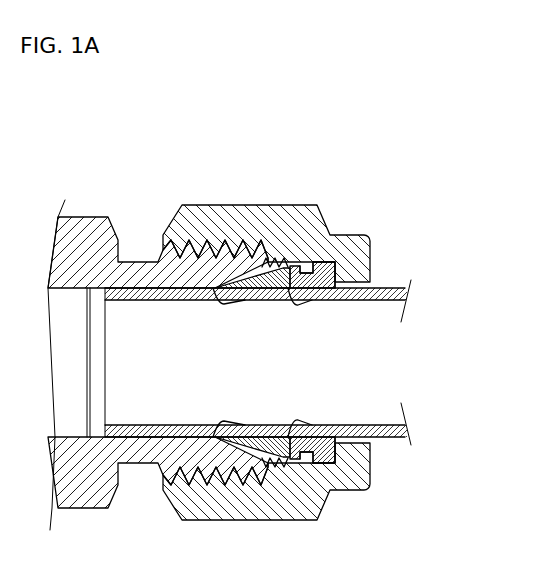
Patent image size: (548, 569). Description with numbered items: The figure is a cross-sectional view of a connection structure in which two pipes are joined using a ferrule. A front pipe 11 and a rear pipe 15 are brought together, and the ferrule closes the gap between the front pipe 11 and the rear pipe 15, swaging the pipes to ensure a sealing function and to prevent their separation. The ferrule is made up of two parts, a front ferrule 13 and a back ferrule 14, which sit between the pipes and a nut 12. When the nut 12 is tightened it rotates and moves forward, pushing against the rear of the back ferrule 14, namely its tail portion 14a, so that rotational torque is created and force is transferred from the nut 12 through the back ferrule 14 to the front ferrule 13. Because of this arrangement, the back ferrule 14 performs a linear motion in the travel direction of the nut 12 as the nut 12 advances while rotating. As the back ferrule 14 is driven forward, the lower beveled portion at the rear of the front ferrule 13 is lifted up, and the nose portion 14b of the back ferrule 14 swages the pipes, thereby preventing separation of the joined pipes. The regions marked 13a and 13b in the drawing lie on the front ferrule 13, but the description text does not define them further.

The front pipe 11 is at (85, 232).
The nut 12 is at (372, 242).
The front ferrule 13 is at (250, 300).
The front ferrule front portion 13a is at (240, 275).
The front ferrule serrated portion 13b is at (272, 262).
The back ferrule 14 is at (310, 296).
The tail portion 14a is at (325, 280).
The nose portion 14b is at (305, 262).
The rear pipe 15 is at (405, 291).